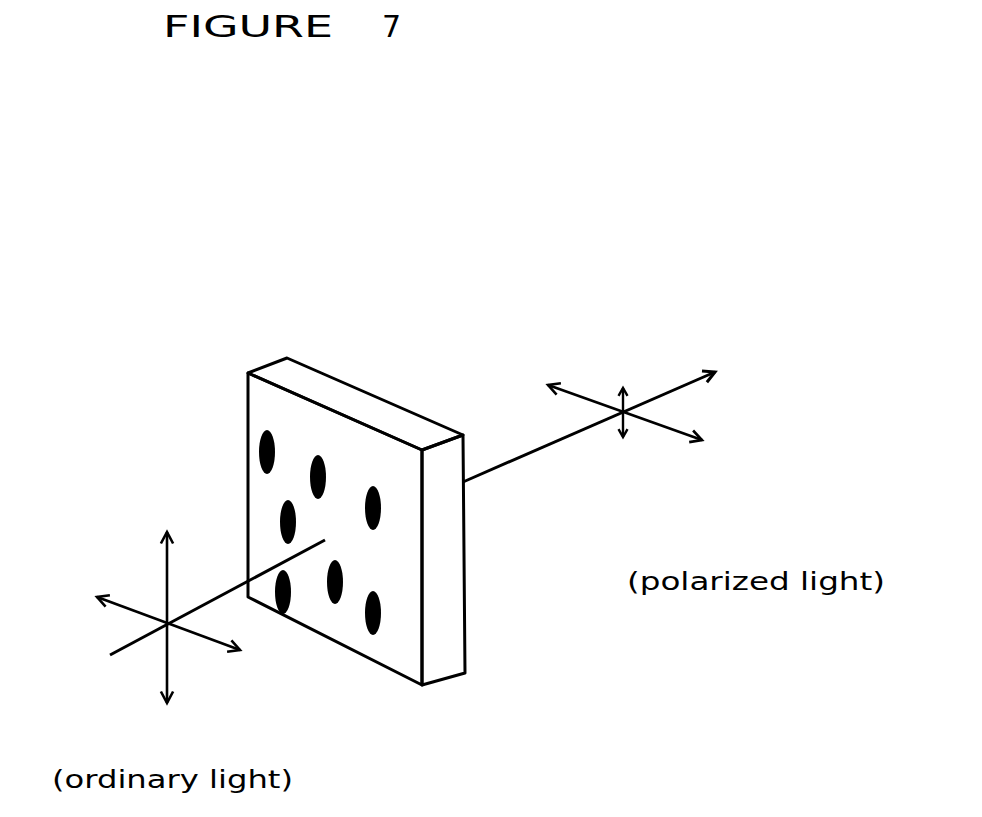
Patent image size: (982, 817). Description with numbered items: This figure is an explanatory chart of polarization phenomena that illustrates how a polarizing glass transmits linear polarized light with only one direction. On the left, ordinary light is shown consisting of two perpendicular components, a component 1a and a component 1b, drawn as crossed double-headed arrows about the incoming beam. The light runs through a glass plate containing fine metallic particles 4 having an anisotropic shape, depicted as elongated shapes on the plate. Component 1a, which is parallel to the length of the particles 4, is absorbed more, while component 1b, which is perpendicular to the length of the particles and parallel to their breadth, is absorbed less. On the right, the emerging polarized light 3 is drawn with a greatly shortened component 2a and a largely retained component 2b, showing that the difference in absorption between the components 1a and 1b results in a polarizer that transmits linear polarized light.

The component of ordinary light 1a is at (163, 555).
The component of ordinary light 1b is at (205, 650).
The attenuated vertical polarization component of polarized light 2a is at (620, 388).
The horizontal polarization component of polarized light 2b is at (672, 432).
The polarized light beam 3 is at (682, 393).
The fine metallic particles 4 is at (257, 450).